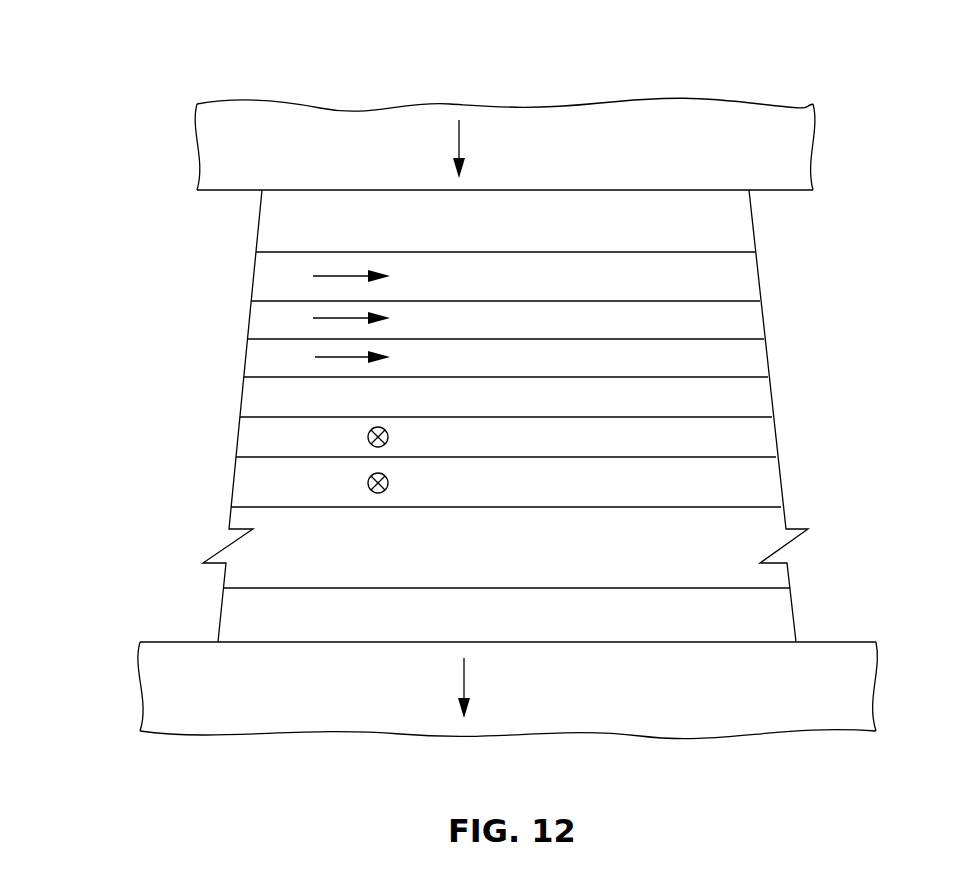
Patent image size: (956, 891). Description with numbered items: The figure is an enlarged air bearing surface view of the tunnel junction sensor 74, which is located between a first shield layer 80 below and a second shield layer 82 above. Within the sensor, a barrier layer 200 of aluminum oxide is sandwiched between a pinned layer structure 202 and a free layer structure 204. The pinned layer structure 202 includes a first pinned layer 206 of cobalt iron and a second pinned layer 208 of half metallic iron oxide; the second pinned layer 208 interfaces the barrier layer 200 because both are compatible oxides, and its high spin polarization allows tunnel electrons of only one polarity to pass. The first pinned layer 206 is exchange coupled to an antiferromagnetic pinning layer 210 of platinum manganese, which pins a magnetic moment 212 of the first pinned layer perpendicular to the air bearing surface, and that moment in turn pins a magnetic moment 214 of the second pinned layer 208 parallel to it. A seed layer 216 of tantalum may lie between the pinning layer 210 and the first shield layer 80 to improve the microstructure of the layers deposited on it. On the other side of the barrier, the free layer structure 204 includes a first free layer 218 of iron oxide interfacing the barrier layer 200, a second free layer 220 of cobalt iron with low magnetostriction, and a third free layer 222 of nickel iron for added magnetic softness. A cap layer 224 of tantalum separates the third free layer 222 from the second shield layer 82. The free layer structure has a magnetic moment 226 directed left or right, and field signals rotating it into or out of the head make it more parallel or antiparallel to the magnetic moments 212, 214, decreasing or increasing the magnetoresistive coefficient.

The second shield layer 82 is at (807, 132).
The first shield layer 80 is at (832, 720).
The tunnel junction sensor 74 is at (184, 190).
The cap layer 224 is at (752, 224).
The third free layer 222 is at (757, 276).
The second free layer 220 is at (762, 318).
The first free layer 218 is at (767, 357).
The free layer structure 204 is at (501, 211).
The barrier layer 200 is at (772, 394).
The second pinned layer 208 is at (777, 433).
The first pinned layer 206 is at (780, 474).
The pinned layer structure 202 is at (481, 258).
The antiferromagnetic pinning layer 210 is at (788, 578).
The seed layer 216 is at (793, 614).
The magnetic moment of the free layer structure 226 is at (325, 318).
The magnetic moment of the second pinned layer 214 is at (368, 437).
The magnetic moment of the first pinned layer 212 is at (368, 482).